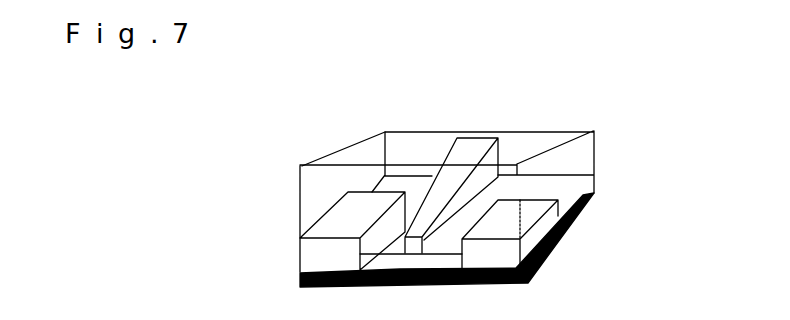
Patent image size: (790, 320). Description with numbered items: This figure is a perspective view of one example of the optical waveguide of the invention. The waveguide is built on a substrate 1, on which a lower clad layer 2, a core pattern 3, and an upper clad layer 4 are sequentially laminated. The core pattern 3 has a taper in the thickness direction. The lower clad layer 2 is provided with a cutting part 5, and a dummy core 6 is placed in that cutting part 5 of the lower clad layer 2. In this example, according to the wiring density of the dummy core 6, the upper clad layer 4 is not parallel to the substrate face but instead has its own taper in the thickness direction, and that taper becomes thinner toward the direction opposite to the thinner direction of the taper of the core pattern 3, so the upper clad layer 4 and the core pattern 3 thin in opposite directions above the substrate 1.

The substrate 1 is at (597, 198).
The lower clad layer 2 is at (555, 186).
The core pattern 3 is at (468, 152).
The upper clad layer 4 is at (352, 150).
The cutting part 5 is at (588, 215).
The dummy core 6 is at (337, 258).